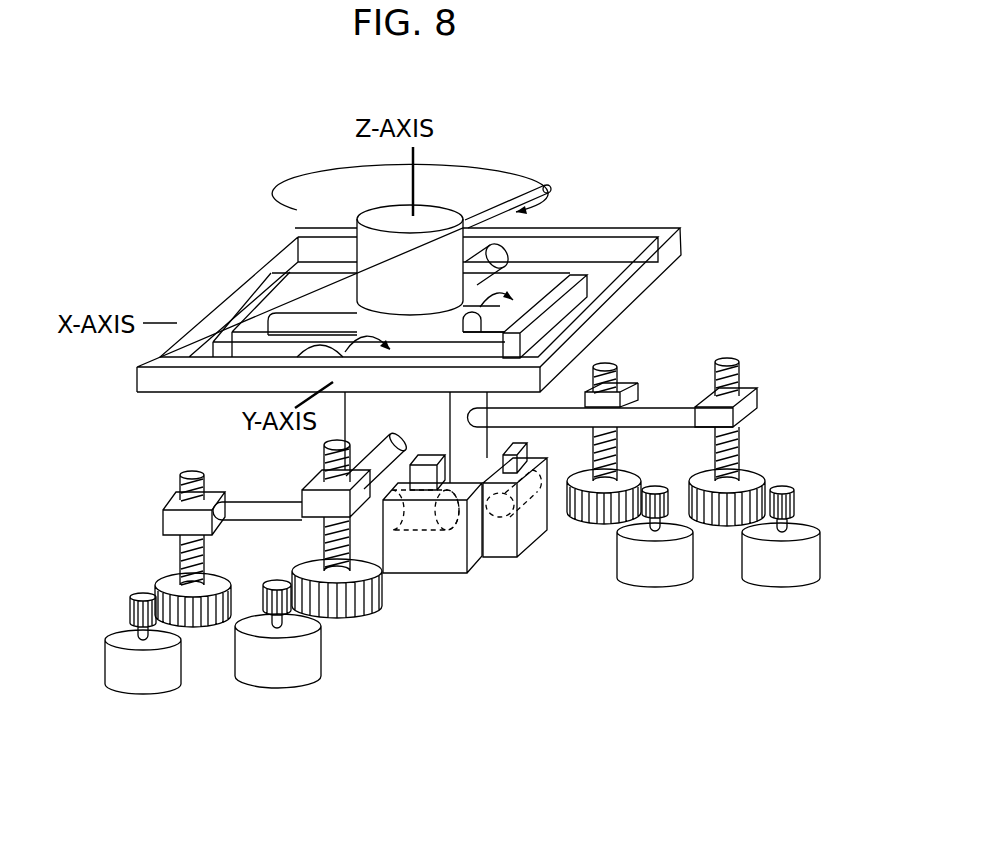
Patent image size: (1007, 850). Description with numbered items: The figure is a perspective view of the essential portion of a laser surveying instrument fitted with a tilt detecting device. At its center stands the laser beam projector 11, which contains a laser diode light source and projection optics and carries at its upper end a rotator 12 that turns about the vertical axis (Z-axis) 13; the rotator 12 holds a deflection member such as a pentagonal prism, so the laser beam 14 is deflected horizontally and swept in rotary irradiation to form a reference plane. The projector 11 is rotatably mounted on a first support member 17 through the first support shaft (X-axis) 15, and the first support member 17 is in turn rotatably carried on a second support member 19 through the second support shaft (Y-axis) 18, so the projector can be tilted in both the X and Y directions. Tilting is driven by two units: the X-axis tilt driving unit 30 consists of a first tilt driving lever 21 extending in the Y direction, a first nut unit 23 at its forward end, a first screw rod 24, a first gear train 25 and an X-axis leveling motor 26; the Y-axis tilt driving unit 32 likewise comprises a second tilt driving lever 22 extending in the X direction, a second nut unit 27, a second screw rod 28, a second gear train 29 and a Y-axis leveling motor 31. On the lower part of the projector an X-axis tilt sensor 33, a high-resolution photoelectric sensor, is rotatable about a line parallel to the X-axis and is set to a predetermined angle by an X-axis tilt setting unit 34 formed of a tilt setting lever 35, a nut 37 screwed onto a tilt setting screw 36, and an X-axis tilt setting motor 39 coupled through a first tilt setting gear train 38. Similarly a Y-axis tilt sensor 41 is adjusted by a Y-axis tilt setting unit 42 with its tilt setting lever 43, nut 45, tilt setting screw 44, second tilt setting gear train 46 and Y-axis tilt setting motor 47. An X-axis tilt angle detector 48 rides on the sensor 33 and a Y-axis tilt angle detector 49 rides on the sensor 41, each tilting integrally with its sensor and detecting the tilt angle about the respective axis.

The laser beam projector 11 is at (345, 413).
The rotator 12 is at (357, 213).
The vertical axis (Z-axis) 13 is at (414, 156).
The laser beam 14 is at (503, 203).
The first support shaft (X-axis) 15 is at (303, 310).
The first support member 17 is at (547, 278).
The second support shaft (Y-axis) 18 is at (300, 355).
The second support member 19 is at (203, 307).
The first tilt driving lever 21 is at (380, 445).
The second tilt driving lever 22 is at (673, 407).
The first nut unit 23 is at (310, 490).
The first screw rod 24 is at (322, 540).
The first gear train 25 is at (360, 622).
The X-axis leveling motor 26 is at (312, 683).
The second nut unit 27 is at (735, 405).
The second screw rod 28 is at (742, 442).
The second gear train 29 is at (790, 488).
The X-axis tilt driving unit 30 is at (366, 684).
The Y-axis leveling motor 31 is at (814, 527).
The Y-axis tilt driving unit 32 is at (812, 392).
The X-axis tilt sensor 33 is at (530, 543).
The X-axis tilt setting unit 34 is at (597, 560).
The tilt setting lever 35 is at (563, 428).
The tilt setting screw 36 is at (617, 397).
The nut 37 is at (627, 403).
The first tilt setting gear train 38 is at (642, 474).
The X-axis tilt setting motor 39 is at (670, 584).
The Y-axis tilt sensor 41 is at (442, 576).
The Y-axis tilt setting unit 42 is at (147, 556).
The tilt setting lever 43 is at (263, 502).
The tilt setting screw 44 is at (183, 476).
The nut 45 is at (168, 508).
The second tilt setting gear train 46 is at (190, 630).
The Y-axis tilt setting motor 47 is at (112, 630).
The X-axis tilt angle detector 48 is at (520, 443).
The Y-axis tilt angle detector 49 is at (430, 455).